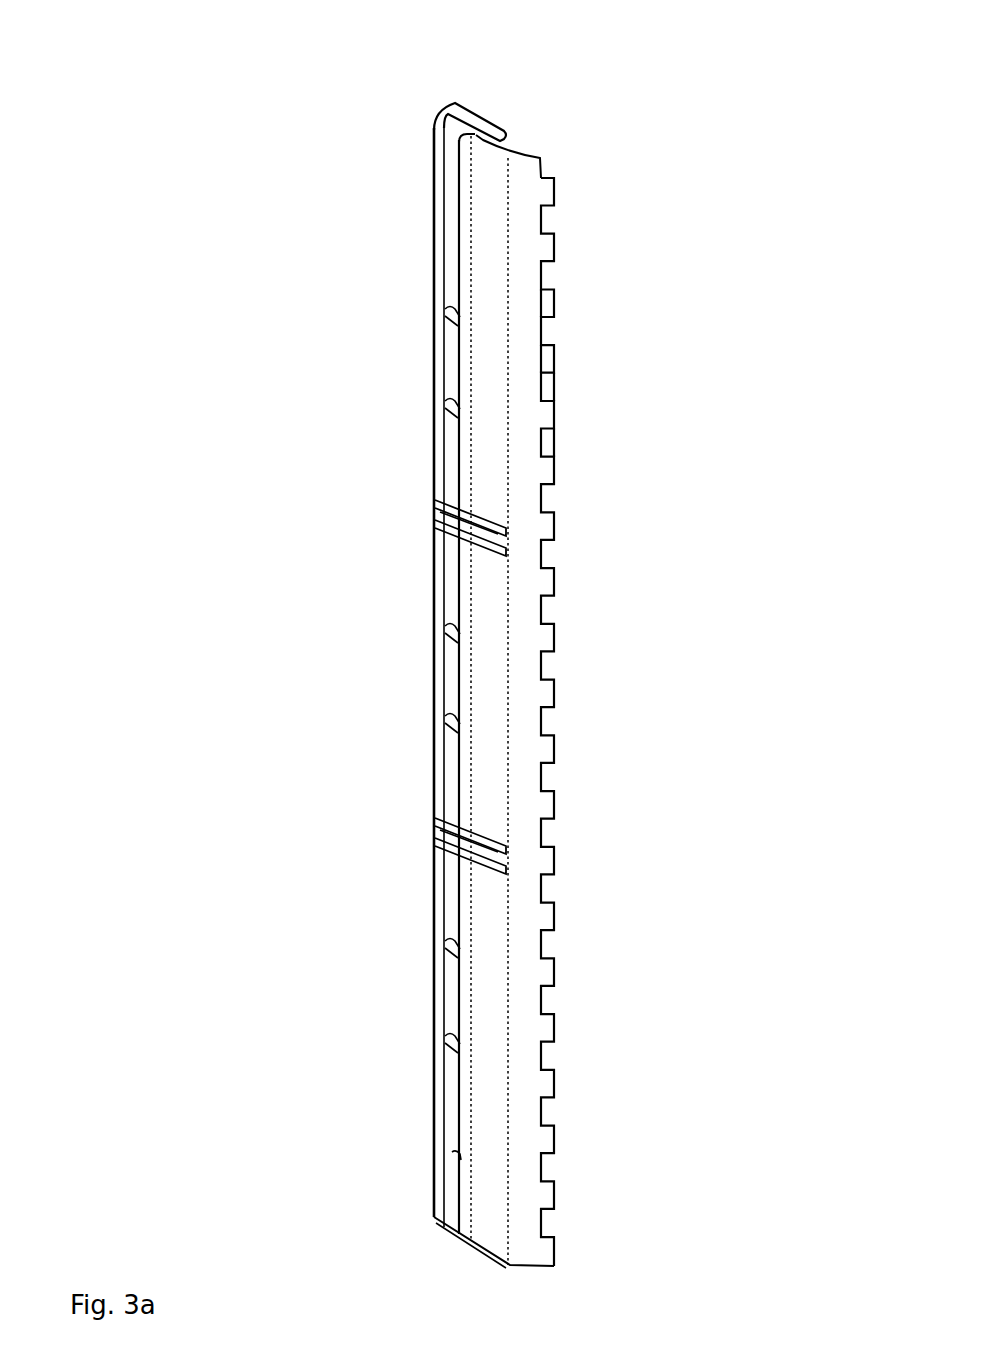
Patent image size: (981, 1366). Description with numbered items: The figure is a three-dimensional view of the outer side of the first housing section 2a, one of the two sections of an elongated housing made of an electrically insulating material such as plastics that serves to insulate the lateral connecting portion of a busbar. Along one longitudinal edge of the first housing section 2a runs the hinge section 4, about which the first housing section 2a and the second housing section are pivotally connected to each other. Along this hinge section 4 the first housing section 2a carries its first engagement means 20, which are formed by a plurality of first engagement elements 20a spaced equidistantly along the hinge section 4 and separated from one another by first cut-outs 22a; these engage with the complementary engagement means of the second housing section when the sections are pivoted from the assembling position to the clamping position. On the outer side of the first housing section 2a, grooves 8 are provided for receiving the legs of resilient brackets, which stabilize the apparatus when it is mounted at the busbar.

The hinge section 4 is at (528, 128).
The first housing section 2a is at (478, 660).
The grooves 8 is at (442, 238).
The first engagement means 20 is at (576, 632).
The first engagement elements 20a is at (548, 357).
The first cut-outs 22a is at (552, 387).